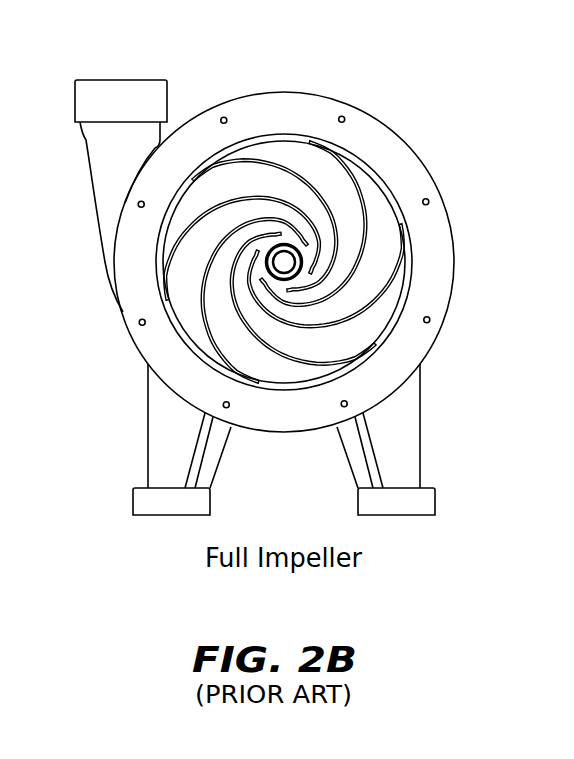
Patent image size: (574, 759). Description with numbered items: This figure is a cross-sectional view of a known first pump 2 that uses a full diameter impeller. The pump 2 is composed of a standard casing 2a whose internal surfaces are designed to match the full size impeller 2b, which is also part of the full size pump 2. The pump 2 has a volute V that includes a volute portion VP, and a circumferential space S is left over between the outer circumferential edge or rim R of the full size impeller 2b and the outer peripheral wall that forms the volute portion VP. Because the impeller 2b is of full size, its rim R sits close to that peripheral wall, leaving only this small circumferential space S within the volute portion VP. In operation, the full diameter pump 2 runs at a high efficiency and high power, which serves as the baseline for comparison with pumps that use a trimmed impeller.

The pump 2 is at (325, 96).
The standard casing 2a is at (397, 361).
The full size impeller 2b is at (343, 223).
The volute V is at (150, 217).
The volute portion VP is at (160, 297).
The circumferential space S is at (210, 367).
The rim R is at (249, 366).